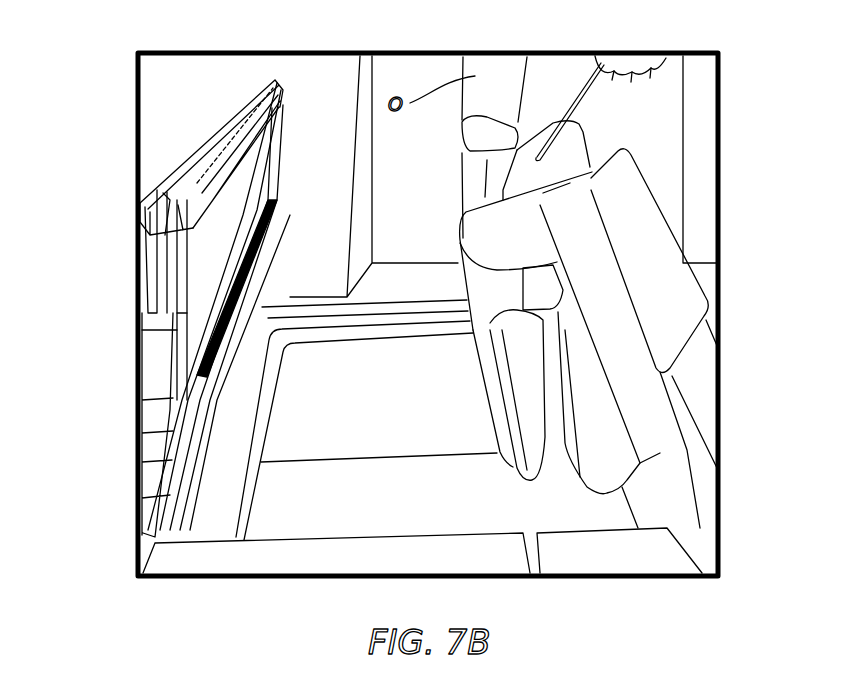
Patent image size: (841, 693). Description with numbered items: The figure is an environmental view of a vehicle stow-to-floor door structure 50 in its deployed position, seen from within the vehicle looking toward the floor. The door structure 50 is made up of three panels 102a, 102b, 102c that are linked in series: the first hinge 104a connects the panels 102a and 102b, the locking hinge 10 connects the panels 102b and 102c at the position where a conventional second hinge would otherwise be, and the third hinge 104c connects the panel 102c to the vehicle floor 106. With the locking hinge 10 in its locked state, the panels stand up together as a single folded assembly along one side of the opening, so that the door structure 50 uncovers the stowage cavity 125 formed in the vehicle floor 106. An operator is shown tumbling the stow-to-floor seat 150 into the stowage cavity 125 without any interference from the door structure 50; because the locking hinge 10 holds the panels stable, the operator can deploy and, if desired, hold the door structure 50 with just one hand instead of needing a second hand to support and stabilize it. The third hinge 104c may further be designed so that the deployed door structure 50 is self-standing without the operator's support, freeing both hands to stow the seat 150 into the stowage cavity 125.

The locking hinge 10 is at (204, 274).
The vehicle stow-to-floor door structure 50 is at (284, 212).
The panel 102a is at (163, 245).
The panel 102b is at (168, 357).
The panel 102c is at (160, 495).
The first hinge 104a is at (262, 76).
The third hinge 104c is at (186, 478).
The vehicle floor 106 is at (320, 561).
The stowage cavity 125 is at (447, 434).
The stow-to-floor seat 150 is at (648, 168).